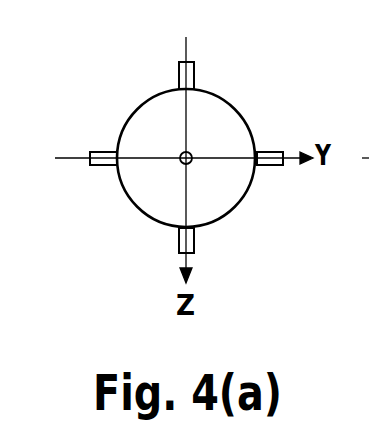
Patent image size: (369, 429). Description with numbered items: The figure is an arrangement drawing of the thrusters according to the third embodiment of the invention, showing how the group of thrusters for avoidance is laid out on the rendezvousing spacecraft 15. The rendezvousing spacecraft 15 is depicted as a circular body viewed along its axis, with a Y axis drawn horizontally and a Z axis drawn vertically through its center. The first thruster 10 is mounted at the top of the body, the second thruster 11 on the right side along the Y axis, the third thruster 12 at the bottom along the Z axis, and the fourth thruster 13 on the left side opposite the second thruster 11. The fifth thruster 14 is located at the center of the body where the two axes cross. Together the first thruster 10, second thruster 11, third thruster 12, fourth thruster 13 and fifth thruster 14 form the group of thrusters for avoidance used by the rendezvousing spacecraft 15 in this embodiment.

The first thruster 10 is at (194, 66).
The second thruster 11 is at (268, 152).
The third thruster 12 is at (196, 238).
The fourth thruster 13 is at (100, 166).
The fifth thruster 14 is at (182, 164).
The rendezvousing spacecraft 15 is at (235, 210).